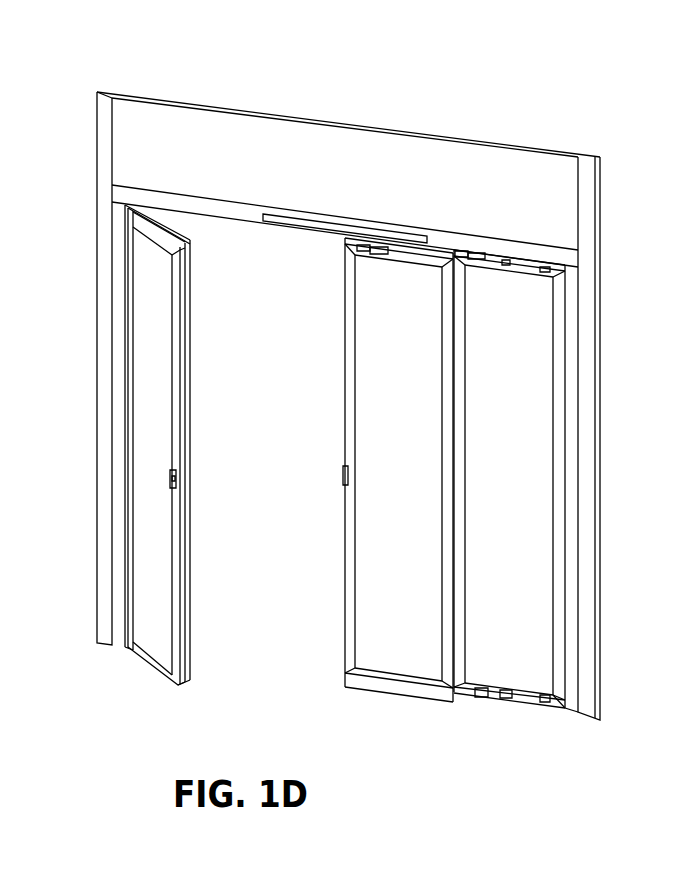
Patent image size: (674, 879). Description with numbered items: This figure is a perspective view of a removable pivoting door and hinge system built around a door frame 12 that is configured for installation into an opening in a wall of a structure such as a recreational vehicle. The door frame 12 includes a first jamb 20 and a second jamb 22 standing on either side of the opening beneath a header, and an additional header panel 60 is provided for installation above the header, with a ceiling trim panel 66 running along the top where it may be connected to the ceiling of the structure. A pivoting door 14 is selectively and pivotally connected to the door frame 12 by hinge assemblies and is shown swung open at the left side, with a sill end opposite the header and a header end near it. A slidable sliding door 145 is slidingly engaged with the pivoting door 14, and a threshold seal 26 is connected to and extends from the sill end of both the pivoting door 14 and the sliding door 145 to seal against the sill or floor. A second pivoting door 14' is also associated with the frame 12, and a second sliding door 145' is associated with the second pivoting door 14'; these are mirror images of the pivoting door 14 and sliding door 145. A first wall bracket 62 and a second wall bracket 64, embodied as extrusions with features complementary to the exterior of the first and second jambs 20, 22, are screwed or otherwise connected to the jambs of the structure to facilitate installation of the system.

The door frame 12 is at (107, 108).
The header panel 60 is at (320, 148).
The ceiling trim panel 66 is at (508, 145).
The first wall bracket 62 is at (103, 513).
The second wall bracket 64 is at (592, 548).
The pivoting door 14 is at (151, 481).
The first jamb 20 is at (128, 612).
The sliding door 145 is at (132, 700).
The second sliding door 145' is at (398, 470).
The second pivoting door 14' is at (509, 479).
The threshold seal 26 is at (418, 693).
The second jamb 22 is at (573, 697).